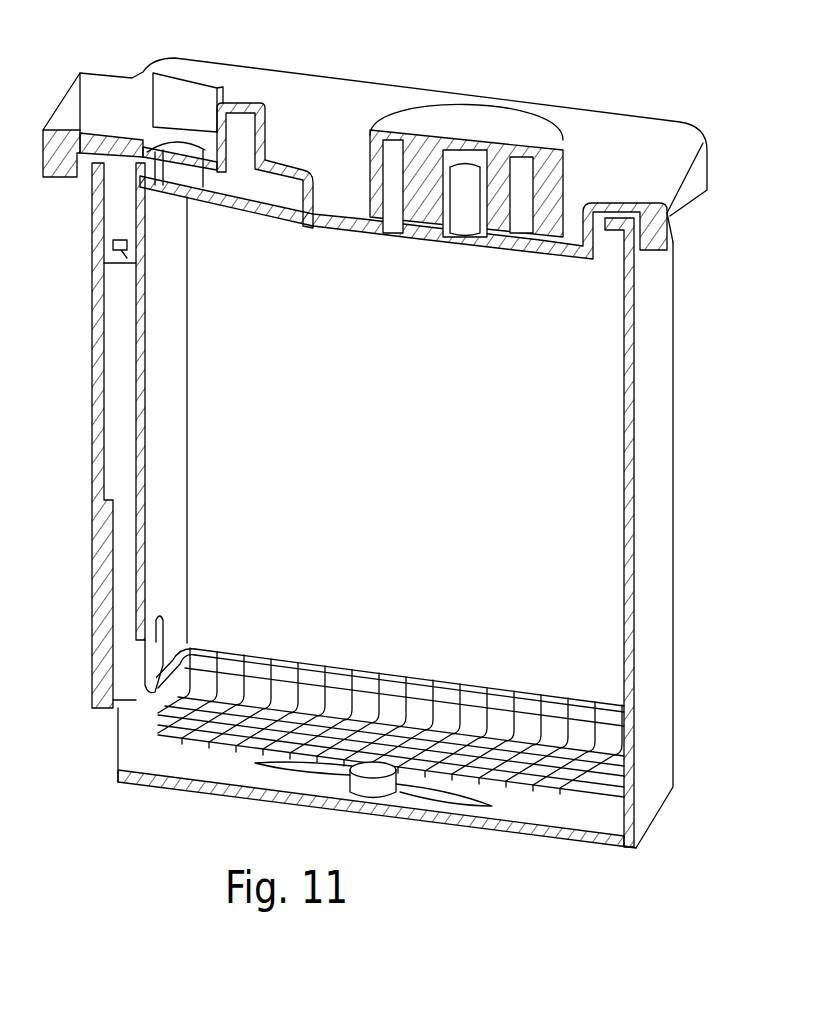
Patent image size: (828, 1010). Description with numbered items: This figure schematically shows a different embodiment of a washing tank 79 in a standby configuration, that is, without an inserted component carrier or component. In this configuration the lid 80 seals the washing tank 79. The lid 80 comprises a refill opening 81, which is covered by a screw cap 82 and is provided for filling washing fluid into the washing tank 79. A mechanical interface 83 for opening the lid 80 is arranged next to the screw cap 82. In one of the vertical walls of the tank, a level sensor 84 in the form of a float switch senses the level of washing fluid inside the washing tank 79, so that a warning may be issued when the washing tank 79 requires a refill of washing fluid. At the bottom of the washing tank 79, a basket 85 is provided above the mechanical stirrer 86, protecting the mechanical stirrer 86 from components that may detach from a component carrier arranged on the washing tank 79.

The washing tank 79 is at (658, 457).
The lid 80 is at (633, 138).
The refill opening 81 is at (463, 177).
The screw cap 82 is at (505, 128).
The mechanical interface 83 is at (188, 112).
The level sensor 84 is at (118, 223).
The basket 85 is at (607, 790).
The mechanical stirrer 86 is at (330, 768).